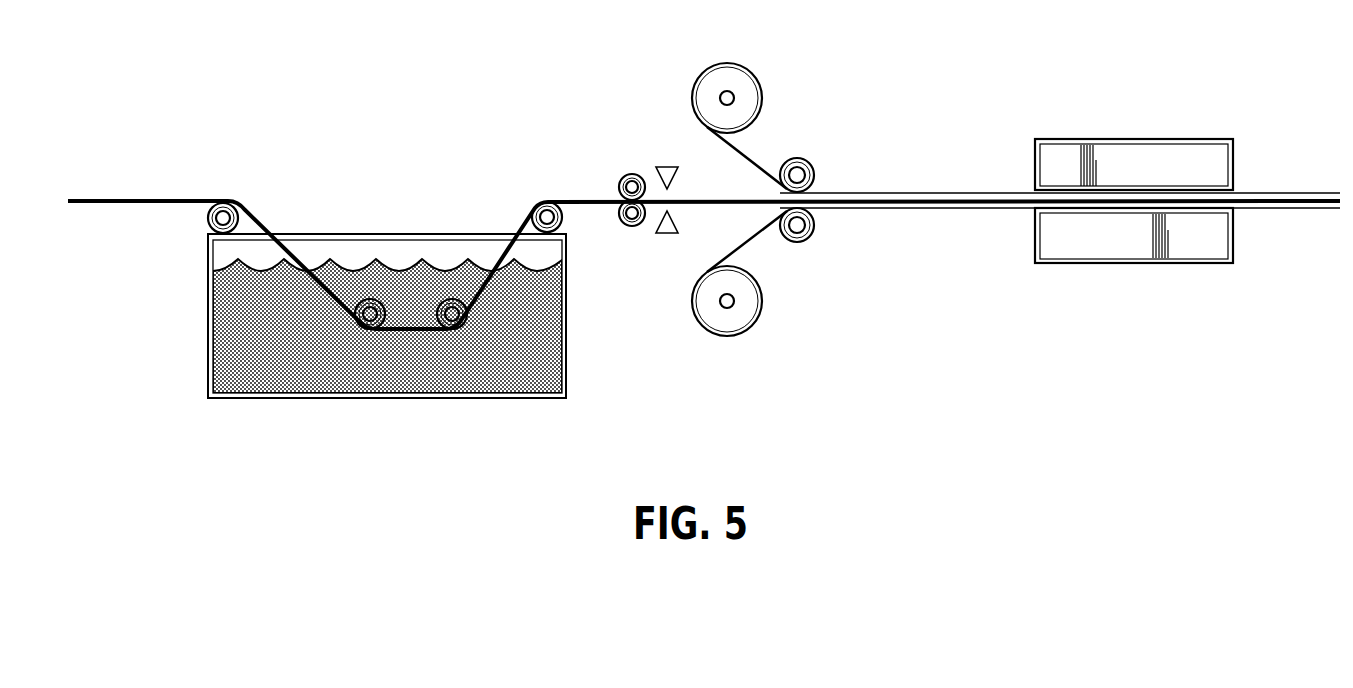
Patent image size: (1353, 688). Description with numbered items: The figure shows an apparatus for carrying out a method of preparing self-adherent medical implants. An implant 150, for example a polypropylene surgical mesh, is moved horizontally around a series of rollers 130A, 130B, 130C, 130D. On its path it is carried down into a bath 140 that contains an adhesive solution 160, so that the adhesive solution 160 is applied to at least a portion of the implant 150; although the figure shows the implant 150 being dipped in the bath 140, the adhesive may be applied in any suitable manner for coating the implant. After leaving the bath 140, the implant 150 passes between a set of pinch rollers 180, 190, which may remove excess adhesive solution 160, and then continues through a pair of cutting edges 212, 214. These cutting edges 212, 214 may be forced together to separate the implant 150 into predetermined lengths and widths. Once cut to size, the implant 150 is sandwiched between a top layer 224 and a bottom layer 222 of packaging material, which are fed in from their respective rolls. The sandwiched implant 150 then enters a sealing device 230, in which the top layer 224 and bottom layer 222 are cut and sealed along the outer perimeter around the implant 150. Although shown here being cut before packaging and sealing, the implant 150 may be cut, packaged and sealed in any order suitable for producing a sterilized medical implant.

The implant 150 is at (139, 198).
The roller 130A is at (208, 226).
The roller 130B is at (370, 330).
The roller 130C is at (452, 330).
The roller 130D is at (533, 197).
The bath 140 is at (208, 352).
The adhesive solution 160 is at (560, 352).
The pinch roller 180 is at (624, 178).
The pinch roller 190 is at (624, 222).
The cutting edge 212 is at (665, 165).
The cutting edge 214 is at (666, 233).
The bottom layer 222 is at (853, 193).
The top layer 224 is at (855, 208).
The sealing device 230 is at (1117, 138).